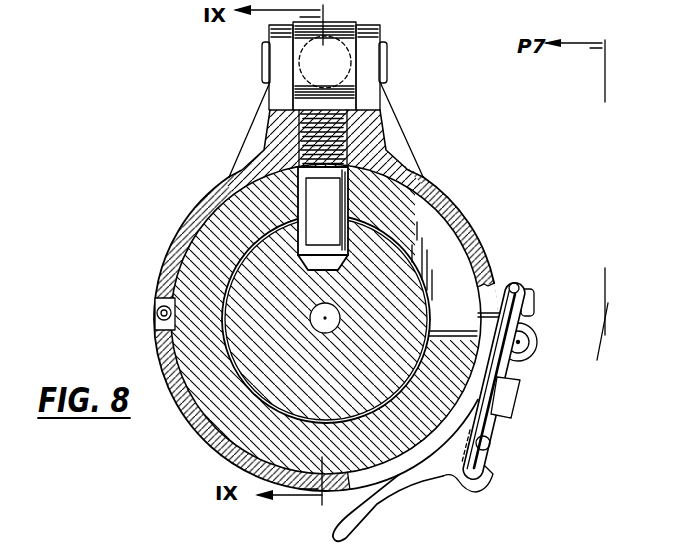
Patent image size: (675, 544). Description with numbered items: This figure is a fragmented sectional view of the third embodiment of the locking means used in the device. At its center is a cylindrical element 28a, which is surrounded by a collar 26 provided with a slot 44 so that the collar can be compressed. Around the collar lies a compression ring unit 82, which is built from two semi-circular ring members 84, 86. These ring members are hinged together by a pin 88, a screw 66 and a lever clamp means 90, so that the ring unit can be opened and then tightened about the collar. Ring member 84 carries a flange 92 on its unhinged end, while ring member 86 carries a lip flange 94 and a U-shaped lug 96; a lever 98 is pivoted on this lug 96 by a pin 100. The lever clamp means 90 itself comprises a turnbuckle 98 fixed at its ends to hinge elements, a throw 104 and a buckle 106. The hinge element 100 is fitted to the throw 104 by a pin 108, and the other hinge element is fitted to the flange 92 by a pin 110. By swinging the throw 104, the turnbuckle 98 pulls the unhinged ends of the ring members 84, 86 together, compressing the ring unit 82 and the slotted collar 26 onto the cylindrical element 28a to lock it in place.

The collar 26 is at (242, 244).
The cylindrical element 28a is at (283, 337).
The slot 44 is at (460, 277).
The screw 66 is at (323, 213).
The compression ring unit 82 is at (483, 231).
The semi-circular ring member 84 is at (213, 439).
The semi-circular ring member 86 is at (335, 313).
The pin 88 is at (157, 311).
The lever clamp means 90 is at (488, 483).
The flange 92 is at (522, 363).
The lip flange 94 is at (534, 304).
The U-shaped lug 96 is at (374, 46).
The turnbuckle 98 is at (510, 412).
The hinge element 100 is at (386, 73).
The throw 104 is at (372, 505).
The buckle 106 is at (516, 283).
The pin 108 is at (490, 443).
The pin 110 is at (537, 341).